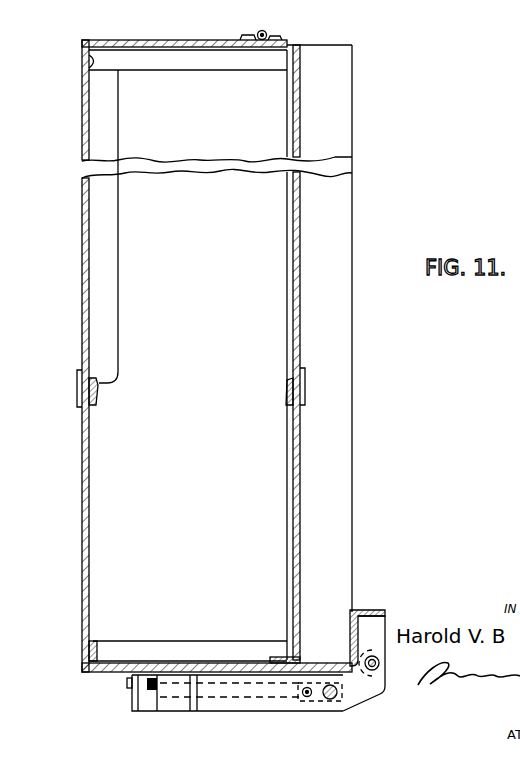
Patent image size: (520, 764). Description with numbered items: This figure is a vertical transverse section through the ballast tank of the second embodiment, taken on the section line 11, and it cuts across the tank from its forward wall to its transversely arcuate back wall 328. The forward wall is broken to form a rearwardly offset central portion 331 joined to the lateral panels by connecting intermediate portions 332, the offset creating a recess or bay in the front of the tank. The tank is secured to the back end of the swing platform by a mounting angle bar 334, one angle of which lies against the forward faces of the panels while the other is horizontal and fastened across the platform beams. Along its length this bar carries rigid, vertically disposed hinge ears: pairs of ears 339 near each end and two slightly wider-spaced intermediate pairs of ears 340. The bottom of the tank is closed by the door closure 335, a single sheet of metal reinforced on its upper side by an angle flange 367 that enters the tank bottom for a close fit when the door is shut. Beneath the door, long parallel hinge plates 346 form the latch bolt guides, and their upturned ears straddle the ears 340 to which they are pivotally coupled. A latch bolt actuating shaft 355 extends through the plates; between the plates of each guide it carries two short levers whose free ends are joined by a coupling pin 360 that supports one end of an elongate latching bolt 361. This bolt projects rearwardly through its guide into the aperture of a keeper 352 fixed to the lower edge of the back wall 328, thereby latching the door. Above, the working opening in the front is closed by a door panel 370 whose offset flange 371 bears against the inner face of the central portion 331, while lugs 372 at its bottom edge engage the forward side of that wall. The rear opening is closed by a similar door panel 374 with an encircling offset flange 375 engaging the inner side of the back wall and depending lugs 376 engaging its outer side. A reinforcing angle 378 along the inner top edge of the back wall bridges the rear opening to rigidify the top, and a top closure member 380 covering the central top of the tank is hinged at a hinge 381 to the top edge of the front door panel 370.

The section line 11 is at (24, 0).
The back wall 328 is at (84, 505).
The central portion 331 is at (298, 537).
The intermediate portions 332 is at (340, 123).
The mounting angle bar 334 is at (354, 611).
The door closure 335 is at (80, 667).
The hinge ears 339 is at (371, 636).
The hinge ears 340 is at (370, 690).
The hinge plates 346 is at (226, 709).
The keeper 352 is at (142, 699).
The latch bolt actuating shaft 355 is at (206, 0).
The coupling pin 360 is at (311, 698).
The latching bolt 361 is at (125, 683).
The angle flange 367 is at (96, 645).
The door panel 370 is at (296, 252).
The offset flange 371 is at (287, 398).
The lugs 372 is at (305, 390).
The door panel 374 is at (84, 246).
The offset flange 375 is at (96, 398).
The depending lugs 376 is at (77, 385).
The reinforcing angle 378 is at (88, 75).
The top closure member 380 is at (212, 40).
The hinge 381 is at (268, 34).